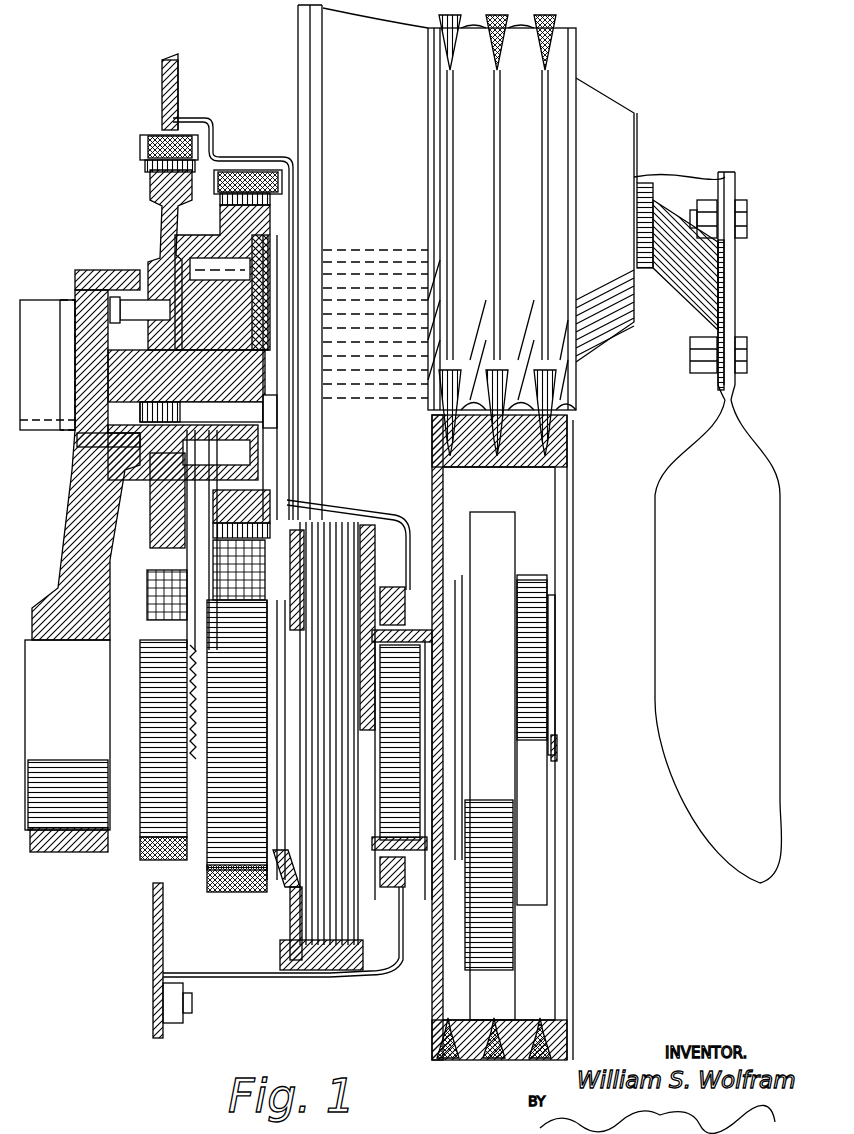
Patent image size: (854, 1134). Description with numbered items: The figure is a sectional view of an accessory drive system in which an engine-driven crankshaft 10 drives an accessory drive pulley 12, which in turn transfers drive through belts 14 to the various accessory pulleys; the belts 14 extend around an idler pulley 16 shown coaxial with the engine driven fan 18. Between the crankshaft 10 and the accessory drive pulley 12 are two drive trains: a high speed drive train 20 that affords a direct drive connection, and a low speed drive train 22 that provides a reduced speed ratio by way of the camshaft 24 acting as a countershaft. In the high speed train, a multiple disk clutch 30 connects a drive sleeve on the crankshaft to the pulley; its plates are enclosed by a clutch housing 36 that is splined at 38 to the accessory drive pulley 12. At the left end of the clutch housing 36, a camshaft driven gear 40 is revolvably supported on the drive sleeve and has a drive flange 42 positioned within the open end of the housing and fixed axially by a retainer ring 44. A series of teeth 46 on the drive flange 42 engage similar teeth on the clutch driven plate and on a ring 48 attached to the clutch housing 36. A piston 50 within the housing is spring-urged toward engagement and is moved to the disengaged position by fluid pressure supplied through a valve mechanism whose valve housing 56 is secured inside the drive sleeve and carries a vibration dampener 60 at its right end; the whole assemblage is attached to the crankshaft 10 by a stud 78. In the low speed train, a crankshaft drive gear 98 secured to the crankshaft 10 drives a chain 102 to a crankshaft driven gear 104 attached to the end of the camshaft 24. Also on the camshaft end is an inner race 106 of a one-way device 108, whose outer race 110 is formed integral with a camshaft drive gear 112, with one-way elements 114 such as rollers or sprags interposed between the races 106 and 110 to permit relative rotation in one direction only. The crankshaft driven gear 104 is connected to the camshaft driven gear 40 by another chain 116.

The crankshaft 10 is at (60, 664).
The accessory drive pulley 12 is at (567, 454).
The belts 14 is at (444, 38).
The idler pulley 16 is at (576, 72).
The engine driven fan 18 is at (655, 718).
The high speed drive train 20 is at (297, 878).
The low speed drive train 22 is at (137, 136).
The camshaft 24 is at (42, 308).
The multiple disk clutch 30 is at (332, 526).
The clutch housing 36 is at (405, 522).
The spline 38 is at (406, 630).
The camshaft driven gear 40 is at (212, 858).
The drive flange 42 is at (298, 526).
The retainer ring 44 is at (293, 524).
The teeth 46 is at (352, 526).
The ring 48 is at (360, 553).
The piston 50 is at (312, 526).
The valve housing 56 is at (546, 639).
The vibration dampener 60 is at (508, 532).
The stud 78 is at (558, 748).
The crankshaft drive gear 98 is at (142, 832).
The chain 102 is at (150, 582).
The crankshaft driven gear 104 is at (156, 180).
The inner race 106 is at (176, 342).
The one-way device 108 is at (255, 285).
The outer race 110 is at (250, 224).
The camshaft drive gear 112 is at (242, 172).
The one-way elements 114 is at (198, 276).
The chain 116 is at (268, 170).